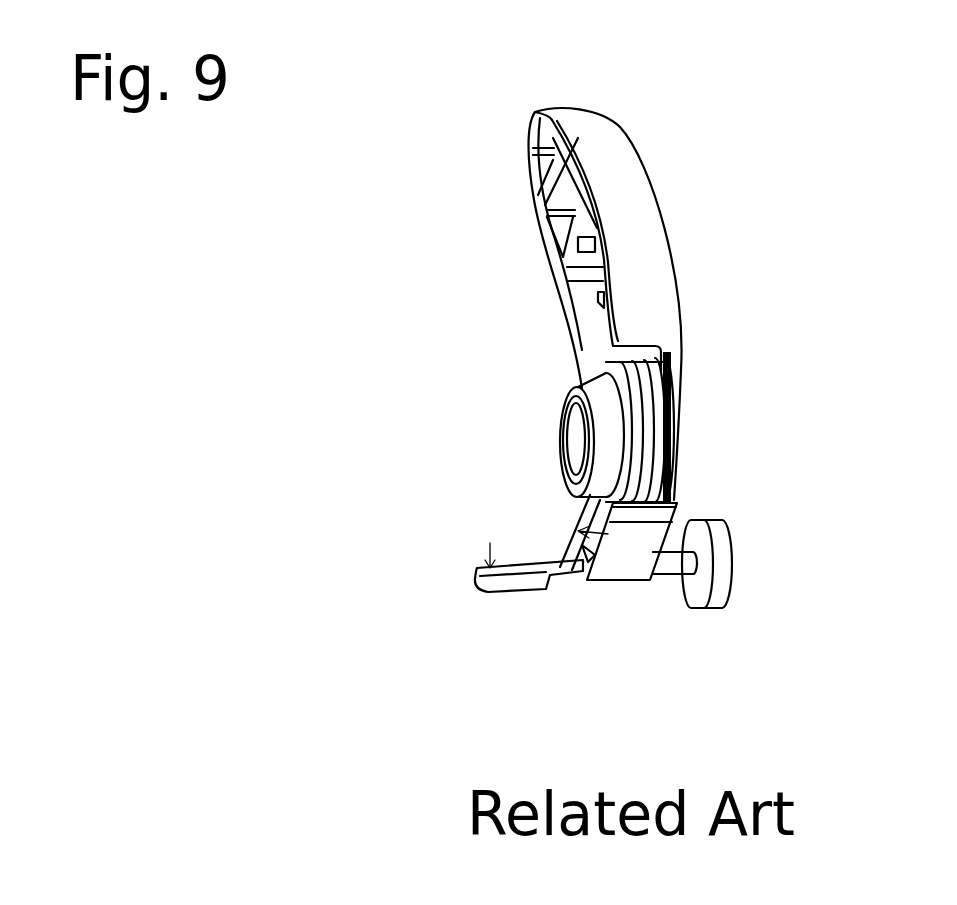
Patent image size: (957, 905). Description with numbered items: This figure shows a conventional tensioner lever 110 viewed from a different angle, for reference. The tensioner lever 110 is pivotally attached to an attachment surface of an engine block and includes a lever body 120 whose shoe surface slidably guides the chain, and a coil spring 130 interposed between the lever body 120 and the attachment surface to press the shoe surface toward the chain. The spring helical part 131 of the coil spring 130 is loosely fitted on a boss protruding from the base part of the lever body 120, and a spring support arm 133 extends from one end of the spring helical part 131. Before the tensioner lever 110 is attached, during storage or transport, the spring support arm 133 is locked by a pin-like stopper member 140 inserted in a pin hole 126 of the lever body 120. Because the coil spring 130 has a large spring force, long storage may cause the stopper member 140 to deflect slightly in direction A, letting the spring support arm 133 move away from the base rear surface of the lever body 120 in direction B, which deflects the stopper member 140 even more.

The tensioner lever 110 is at (376, 234).
The lever body 120 is at (618, 200).
The pin hole 126 is at (592, 582).
The coil spring 130 is at (628, 428).
The spring helical part 131 is at (652, 452).
The spring support arm 133 is at (567, 548).
The stopper member 140 is at (740, 570).